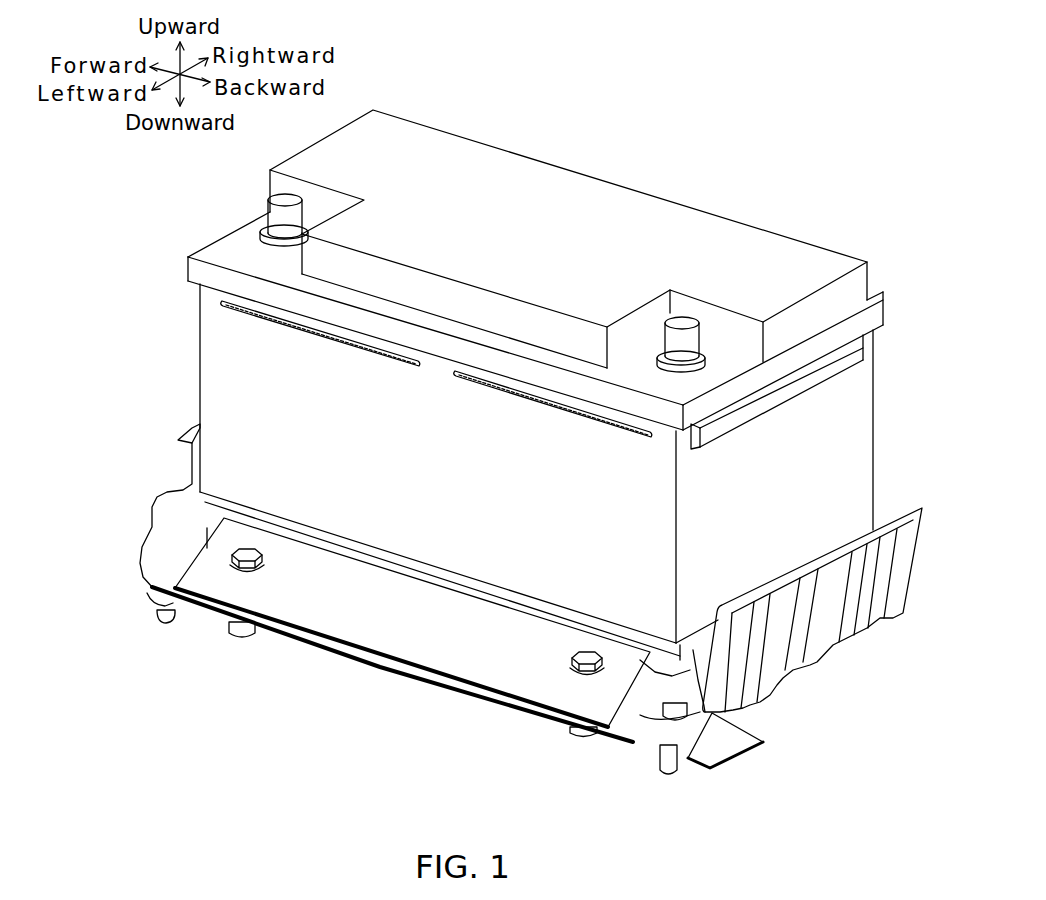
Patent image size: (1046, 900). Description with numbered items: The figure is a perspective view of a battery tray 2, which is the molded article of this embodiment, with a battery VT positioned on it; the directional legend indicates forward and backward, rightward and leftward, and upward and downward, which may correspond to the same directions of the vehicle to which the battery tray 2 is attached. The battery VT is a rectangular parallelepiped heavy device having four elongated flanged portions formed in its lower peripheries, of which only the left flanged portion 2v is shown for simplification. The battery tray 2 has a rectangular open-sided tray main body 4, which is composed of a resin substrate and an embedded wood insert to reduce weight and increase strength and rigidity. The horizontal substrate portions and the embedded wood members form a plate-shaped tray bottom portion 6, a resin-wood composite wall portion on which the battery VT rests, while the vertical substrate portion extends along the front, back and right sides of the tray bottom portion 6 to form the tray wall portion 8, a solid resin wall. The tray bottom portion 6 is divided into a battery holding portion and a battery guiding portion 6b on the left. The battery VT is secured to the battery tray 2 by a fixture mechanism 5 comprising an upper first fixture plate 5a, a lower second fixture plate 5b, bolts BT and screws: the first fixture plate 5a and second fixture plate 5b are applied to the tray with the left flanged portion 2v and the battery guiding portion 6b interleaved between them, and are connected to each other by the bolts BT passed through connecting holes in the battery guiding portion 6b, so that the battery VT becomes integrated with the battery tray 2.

The battery VT is at (608, 176).
The battery tray 2 is at (890, 476).
The tray main body 4 is at (531, 583).
The tray wall portion 8 is at (837, 600).
The fixture mechanism 5 is at (489, 670).
The first fixture plate 5a is at (420, 623).
The second fixture plate 5b is at (720, 745).
The bolts BT is at (236, 572).
The tray bottom portion 6 is at (622, 723).
The battery guiding portion 6b is at (464, 698).
The left flanged portion 2v is at (660, 675).